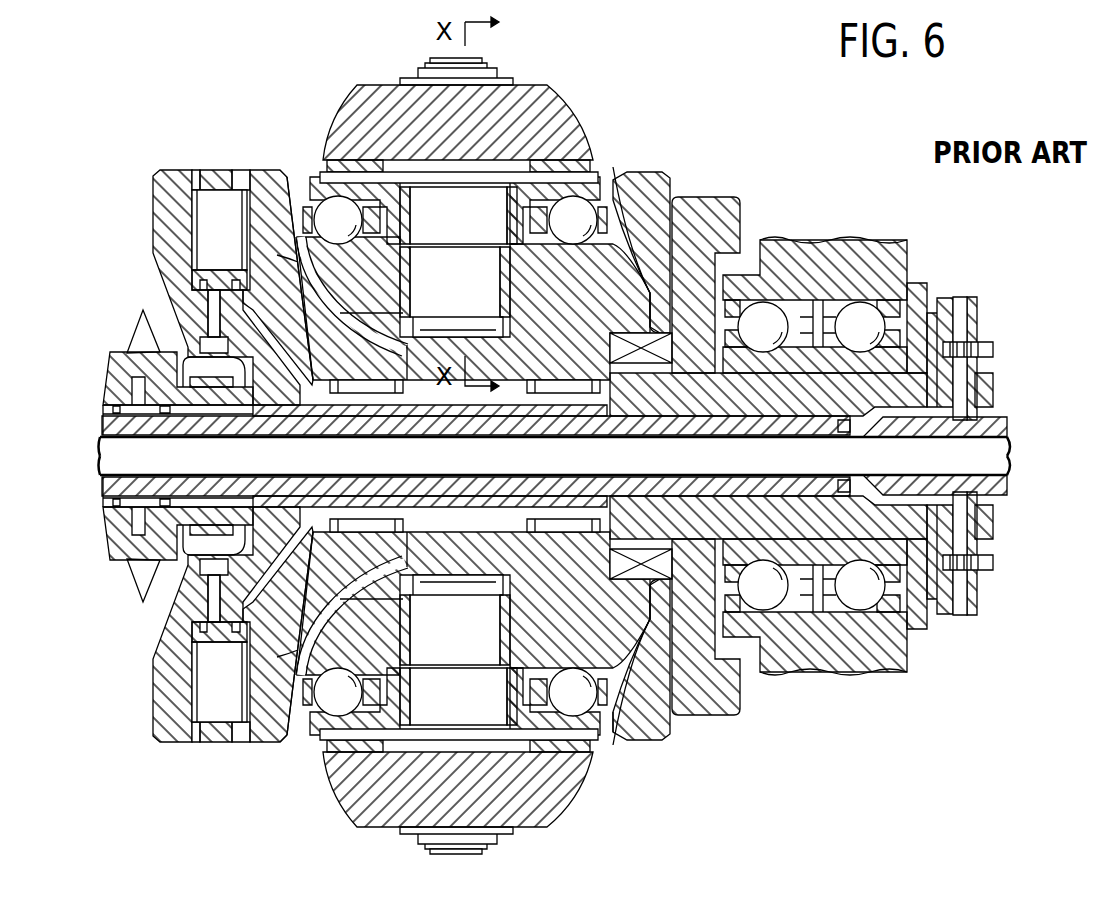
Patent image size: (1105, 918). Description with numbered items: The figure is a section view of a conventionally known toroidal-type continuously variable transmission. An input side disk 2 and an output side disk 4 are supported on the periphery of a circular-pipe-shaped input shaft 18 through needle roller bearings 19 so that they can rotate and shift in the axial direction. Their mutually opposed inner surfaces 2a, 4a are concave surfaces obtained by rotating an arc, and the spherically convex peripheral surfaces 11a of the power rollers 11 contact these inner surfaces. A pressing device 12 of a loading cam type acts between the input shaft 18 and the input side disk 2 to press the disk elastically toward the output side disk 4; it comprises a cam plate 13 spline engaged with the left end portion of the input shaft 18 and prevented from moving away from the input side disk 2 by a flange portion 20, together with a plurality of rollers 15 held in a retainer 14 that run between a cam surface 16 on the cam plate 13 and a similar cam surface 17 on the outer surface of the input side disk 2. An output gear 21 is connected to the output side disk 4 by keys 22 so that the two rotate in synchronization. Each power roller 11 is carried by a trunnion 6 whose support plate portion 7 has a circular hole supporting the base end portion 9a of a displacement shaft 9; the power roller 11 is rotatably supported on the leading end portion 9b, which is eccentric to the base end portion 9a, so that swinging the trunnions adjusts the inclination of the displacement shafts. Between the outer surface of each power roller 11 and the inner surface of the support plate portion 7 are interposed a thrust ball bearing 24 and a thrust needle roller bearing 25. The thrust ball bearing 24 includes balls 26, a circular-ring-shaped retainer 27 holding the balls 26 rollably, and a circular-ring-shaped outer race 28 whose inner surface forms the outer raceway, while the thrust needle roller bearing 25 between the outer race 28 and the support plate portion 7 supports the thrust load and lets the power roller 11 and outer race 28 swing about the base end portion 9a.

The input side disk 2 is at (268, 176).
The inner surface of input side disk 2a is at (297, 742).
The output side disk 4 is at (641, 186).
The inner surface of output side disk 4a is at (618, 732).
The trunnion 6 is at (511, 104).
The support plate portion 7 is at (380, 105).
The displacement shaft 9 is at (483, 191).
The base end portion of displacement shaft 9a is at (437, 62).
The leading end portion of displacement shaft 9b is at (435, 340).
The power roller 11 is at (323, 307).
The peripheral surface of power roller 11a is at (290, 260).
The pressing device 12 is at (152, 185).
The cam plate 13 is at (170, 172).
The retainer 14 is at (222, 742).
The roller 15 is at (221, 195).
The cam surface 16 is at (196, 170).
The cam surface 17 is at (243, 170).
The input shaft 18 is at (990, 417).
The needle roller bearing 19 is at (355, 392).
The flange portion 20 is at (155, 348).
The output gear 21 is at (728, 210).
The key 22 is at (650, 548).
The thrust ball bearing 24 is at (578, 215).
The thrust needle roller bearing 25 is at (548, 172).
The ball 26 is at (568, 203).
The retainer 27 is at (682, 200).
The outer race 28 is at (311, 186).